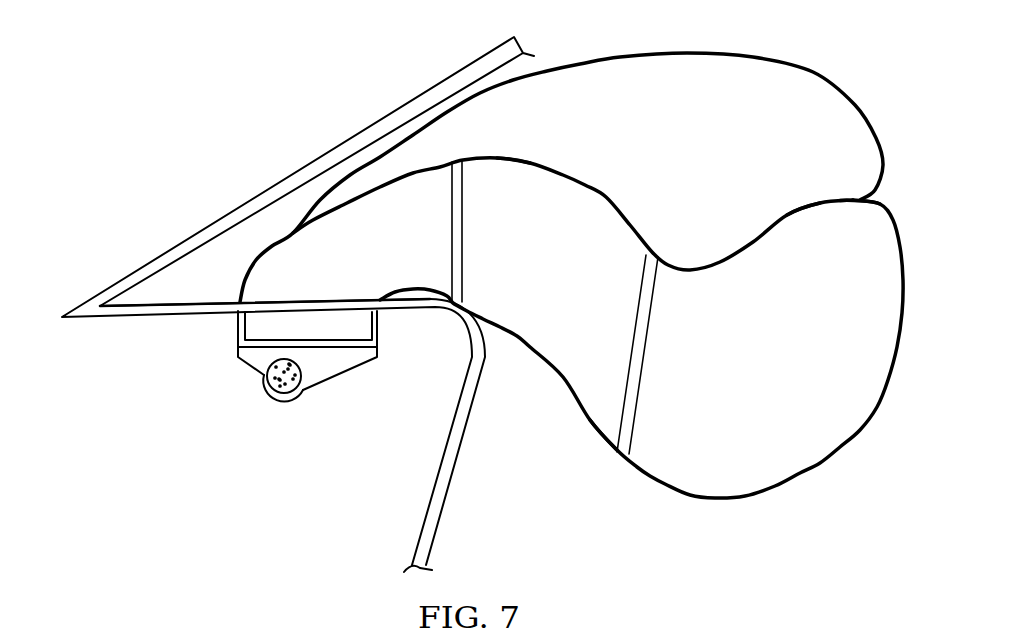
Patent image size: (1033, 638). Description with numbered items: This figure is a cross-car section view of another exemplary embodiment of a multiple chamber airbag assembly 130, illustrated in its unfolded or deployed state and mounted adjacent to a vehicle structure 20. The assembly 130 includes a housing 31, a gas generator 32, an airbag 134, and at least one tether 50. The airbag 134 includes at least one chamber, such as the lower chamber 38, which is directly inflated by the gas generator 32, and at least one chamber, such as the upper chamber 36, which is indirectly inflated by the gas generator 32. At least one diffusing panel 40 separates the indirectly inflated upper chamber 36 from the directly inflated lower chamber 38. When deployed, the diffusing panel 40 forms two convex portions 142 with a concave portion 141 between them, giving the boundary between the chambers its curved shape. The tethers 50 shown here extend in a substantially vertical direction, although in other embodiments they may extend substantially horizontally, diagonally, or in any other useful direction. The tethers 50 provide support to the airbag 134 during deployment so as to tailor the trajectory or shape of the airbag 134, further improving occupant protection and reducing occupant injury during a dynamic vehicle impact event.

The vehicle body panel 20 is at (270, 130).
The multiple chamber airbag assembly 130 is at (186, 348).
The housing 31 is at (300, 371).
The gas generator 32 is at (272, 366).
The upper chamber 36 is at (641, 72).
The lower chamber 38 is at (798, 466).
The diffusing panel 40 is at (818, 202).
The tether 50 is at (460, 303).
The airbag 134 is at (603, 495).
The concave portion 141 is at (689, 230).
The convex portions 142 is at (509, 182).